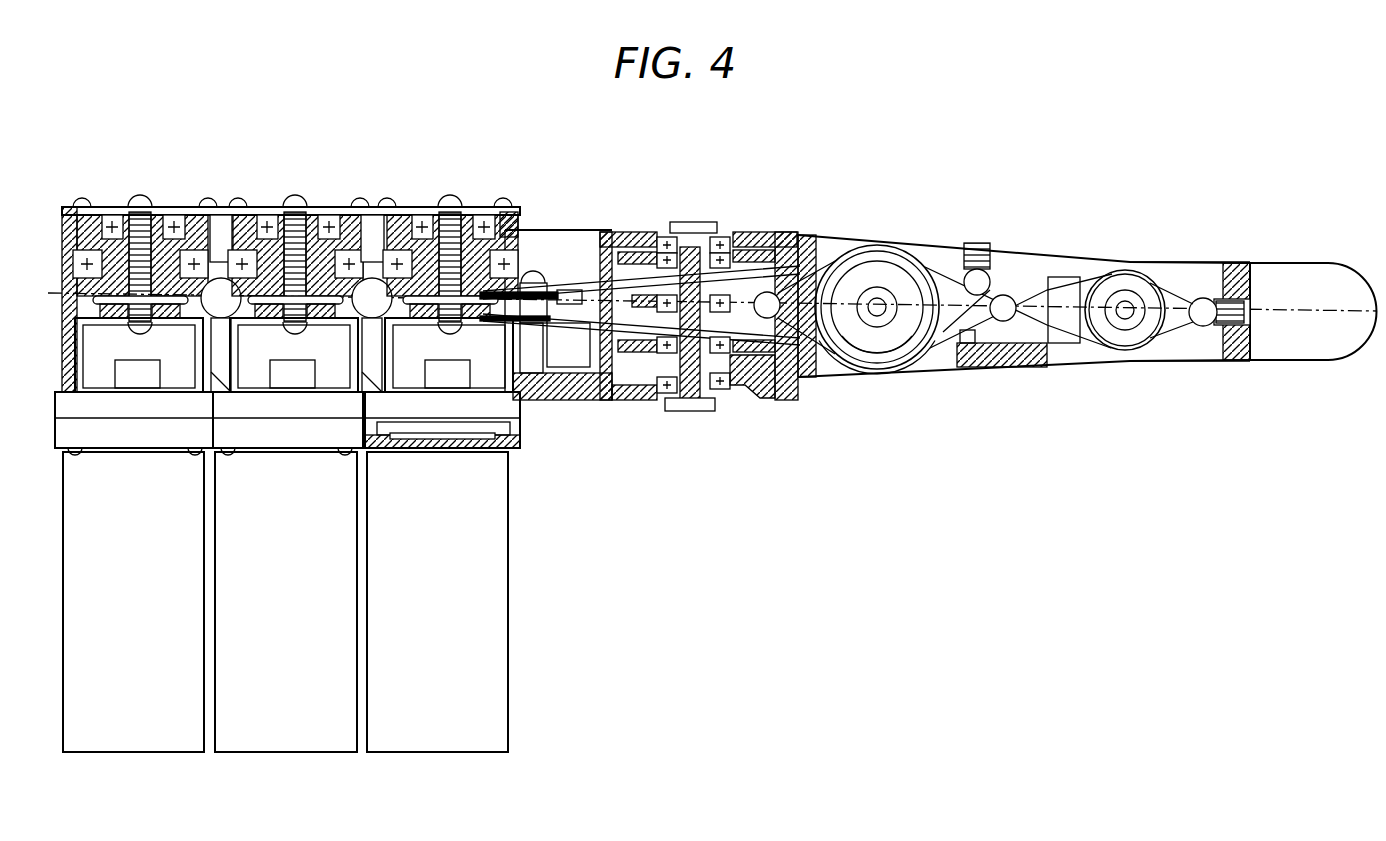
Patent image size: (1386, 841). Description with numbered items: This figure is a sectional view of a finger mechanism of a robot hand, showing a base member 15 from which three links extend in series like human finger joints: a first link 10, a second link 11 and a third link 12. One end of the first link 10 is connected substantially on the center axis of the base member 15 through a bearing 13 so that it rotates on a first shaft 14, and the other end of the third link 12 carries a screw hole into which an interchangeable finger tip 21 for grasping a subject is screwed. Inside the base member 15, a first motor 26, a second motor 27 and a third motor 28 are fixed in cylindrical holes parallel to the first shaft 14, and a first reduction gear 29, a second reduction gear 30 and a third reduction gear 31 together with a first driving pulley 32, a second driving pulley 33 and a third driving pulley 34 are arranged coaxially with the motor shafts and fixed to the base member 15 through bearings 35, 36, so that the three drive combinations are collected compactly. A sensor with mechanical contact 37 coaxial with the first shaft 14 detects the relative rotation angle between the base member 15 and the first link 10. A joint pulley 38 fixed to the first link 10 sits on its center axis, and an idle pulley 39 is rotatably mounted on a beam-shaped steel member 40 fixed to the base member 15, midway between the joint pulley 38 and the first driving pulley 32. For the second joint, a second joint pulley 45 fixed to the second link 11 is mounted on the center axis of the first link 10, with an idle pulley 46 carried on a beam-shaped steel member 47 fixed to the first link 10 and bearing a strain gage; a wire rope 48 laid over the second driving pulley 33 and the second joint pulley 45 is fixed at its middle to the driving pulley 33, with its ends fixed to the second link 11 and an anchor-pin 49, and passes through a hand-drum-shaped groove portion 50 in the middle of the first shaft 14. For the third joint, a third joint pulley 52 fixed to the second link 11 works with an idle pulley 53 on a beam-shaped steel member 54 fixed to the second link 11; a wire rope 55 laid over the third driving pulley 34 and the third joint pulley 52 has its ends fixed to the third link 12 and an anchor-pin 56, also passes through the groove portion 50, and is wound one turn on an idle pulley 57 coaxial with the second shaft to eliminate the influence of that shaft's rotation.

The first link 10 is at (808, 378).
The second link 11 is at (935, 245).
The third link 12 is at (1180, 262).
The bearing 13 is at (636, 398).
The first shaft 14 is at (690, 402).
The base member 15 is at (607, 245).
The finger tip 21 is at (1315, 360).
The first motor 26 is at (428, 752).
The second motor 27 is at (283, 752).
The third motor 28 is at (133, 752).
The first reduction gear 29 is at (443, 450).
The second reduction gear 30 is at (278, 450).
The third reduction gear 31 is at (133, 450).
The first driving pulley 32 is at (497, 212).
The second driving pulley 33 is at (317, 212).
The third driving pulley 34 is at (160, 212).
The bearing 35 is at (425, 212).
The bearing 36 is at (388, 212).
The sensor with mechanical contact 37 is at (745, 395).
The joint pulley 38 is at (640, 240).
The idle pulley 39 is at (565, 240).
The beam-shaped steel member 40 is at (566, 382).
The second joint pulley 45 is at (880, 245).
The idle pulley 46 is at (782, 240).
The beam-shaped steel member 47 is at (783, 395).
The wire rope 48 is at (870, 372).
The anchor-pin 49 is at (1000, 257).
The groove portion 50 is at (695, 235).
The third joint pulley 52 is at (1125, 268).
The idle pulley 53 is at (1000, 345).
The beam-shaped steel member 54 is at (1063, 358).
The wire rope 55 is at (1160, 358).
The anchor-pin 56 is at (1200, 298).
The idle pulley 57 is at (905, 375).